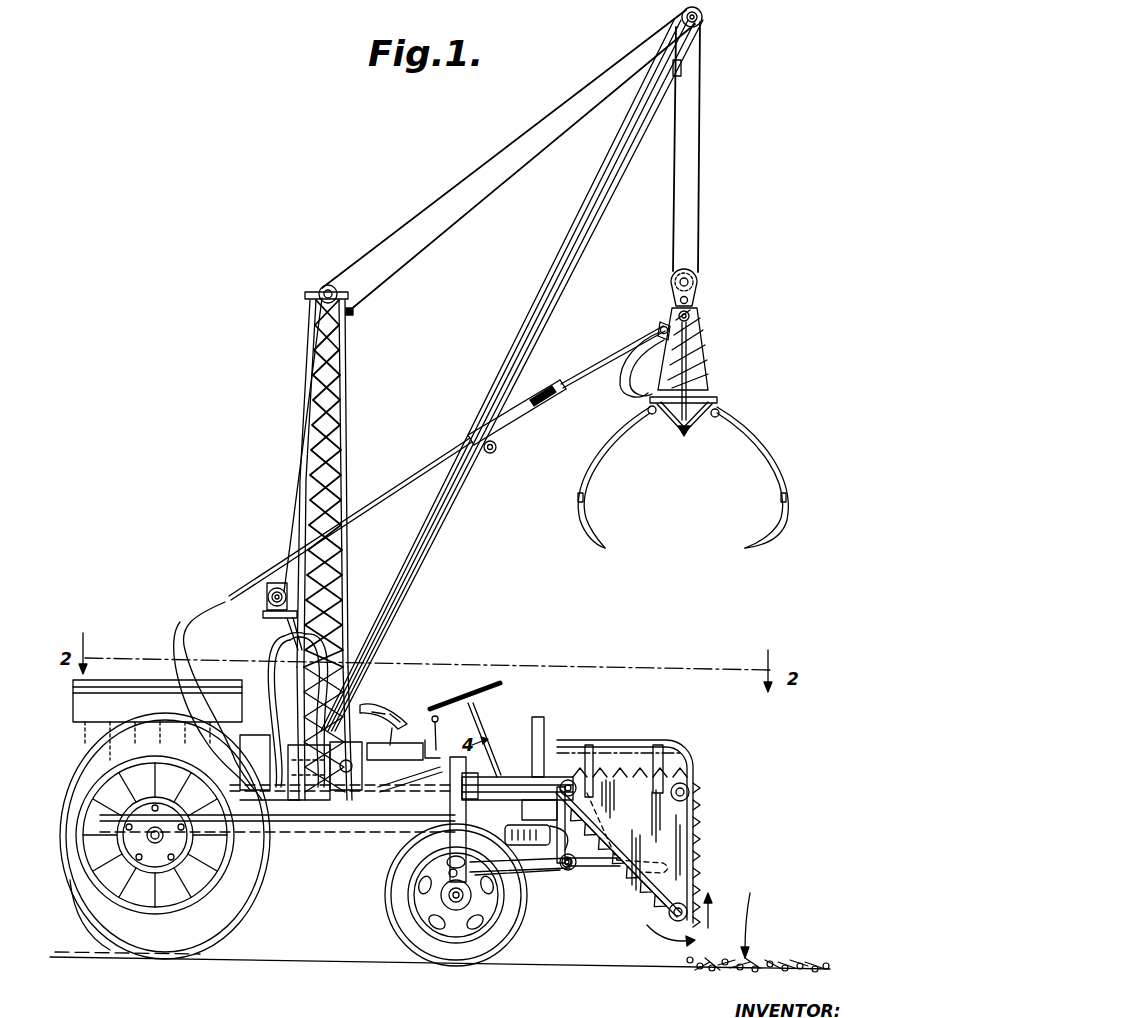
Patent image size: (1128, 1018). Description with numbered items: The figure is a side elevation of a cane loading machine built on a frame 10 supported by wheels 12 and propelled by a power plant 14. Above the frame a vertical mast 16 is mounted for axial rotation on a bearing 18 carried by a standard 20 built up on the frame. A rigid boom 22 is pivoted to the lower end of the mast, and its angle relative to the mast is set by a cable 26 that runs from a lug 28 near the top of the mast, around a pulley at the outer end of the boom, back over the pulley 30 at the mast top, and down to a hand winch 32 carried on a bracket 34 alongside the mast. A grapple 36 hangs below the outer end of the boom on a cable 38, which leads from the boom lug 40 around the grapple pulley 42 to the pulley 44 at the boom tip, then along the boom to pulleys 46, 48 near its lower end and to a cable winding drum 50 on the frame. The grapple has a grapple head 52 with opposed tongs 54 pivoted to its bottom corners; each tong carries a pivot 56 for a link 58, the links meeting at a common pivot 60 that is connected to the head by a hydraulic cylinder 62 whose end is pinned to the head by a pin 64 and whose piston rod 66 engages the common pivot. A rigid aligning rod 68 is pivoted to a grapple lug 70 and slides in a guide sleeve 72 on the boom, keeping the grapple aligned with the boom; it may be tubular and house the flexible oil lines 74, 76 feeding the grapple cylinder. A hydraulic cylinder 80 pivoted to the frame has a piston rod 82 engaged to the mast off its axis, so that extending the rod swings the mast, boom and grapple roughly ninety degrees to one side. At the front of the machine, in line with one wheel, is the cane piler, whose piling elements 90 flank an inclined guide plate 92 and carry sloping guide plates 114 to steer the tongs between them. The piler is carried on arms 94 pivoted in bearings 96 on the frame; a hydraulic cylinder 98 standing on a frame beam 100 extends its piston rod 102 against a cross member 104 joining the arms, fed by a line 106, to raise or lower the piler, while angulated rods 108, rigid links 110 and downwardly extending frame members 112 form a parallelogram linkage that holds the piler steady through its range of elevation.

The frame 10 is at (355, 838).
The wheels 12 is at (228, 900).
The power plant 14 is at (102, 710).
The vertical mast 16 is at (348, 448).
The bearing 18 is at (286, 748).
The standard 20 is at (294, 826).
The rigid boom 22 is at (395, 612).
The cable 26 is at (505, 150).
The lug 28 is at (353, 313).
The pulley 30 is at (331, 284).
The hand winch 32 is at (265, 603).
The bracket 34 is at (270, 630).
The grapple 36 is at (723, 357).
The cable 38 is at (702, 118).
The boom lug 40 is at (683, 66).
The grapple pulley 42 is at (700, 283).
The pulley 44 is at (703, 17).
The pulley 46 is at (360, 700).
The pulley 48 is at (314, 843).
The cable winding drum 50 is at (290, 730).
The grapple head 52 is at (706, 338).
The tongs 54 is at (770, 462).
The pivot 56 is at (648, 410).
The link 58 is at (658, 437).
The common pivot 60 is at (684, 438).
The hydraulic cylinder 62 is at (708, 360).
The pin 64 is at (690, 313).
The piston rod 66 is at (716, 402).
The aligning rod 68 is at (583, 373).
The grapple lug 70 is at (658, 334).
The guide sleeve 72 is at (500, 446).
The flexible oil line 74 is at (628, 372).
The flexible oil line 76 is at (628, 400).
The hydraulic cylinder 80 is at (400, 745).
The piston rod 82 is at (401, 741).
The piling elements 90 is at (697, 844).
The guide plate 92 is at (600, 826).
The arms 94 is at (528, 779).
The bearings 96 is at (462, 779).
The hydraulic cylinder 98 is at (532, 776).
The frame beam 100 is at (536, 843).
The piston rod 102 is at (534, 729).
The cross member 104 is at (592, 720).
The line 106 is at (570, 866).
The angulated rods 108 is at (623, 850).
The rigid links 110 is at (545, 875).
The frame members 112 is at (450, 868).
The guide plates 114 is at (648, 740).